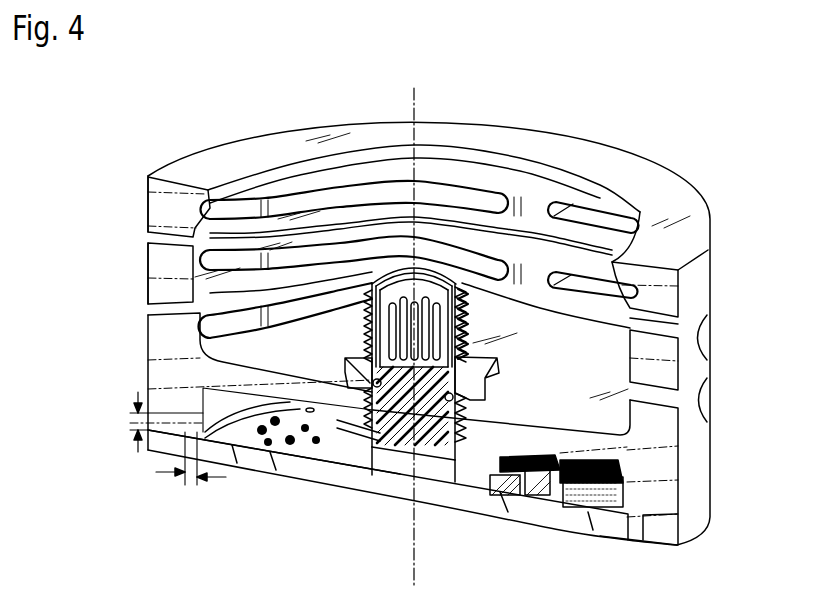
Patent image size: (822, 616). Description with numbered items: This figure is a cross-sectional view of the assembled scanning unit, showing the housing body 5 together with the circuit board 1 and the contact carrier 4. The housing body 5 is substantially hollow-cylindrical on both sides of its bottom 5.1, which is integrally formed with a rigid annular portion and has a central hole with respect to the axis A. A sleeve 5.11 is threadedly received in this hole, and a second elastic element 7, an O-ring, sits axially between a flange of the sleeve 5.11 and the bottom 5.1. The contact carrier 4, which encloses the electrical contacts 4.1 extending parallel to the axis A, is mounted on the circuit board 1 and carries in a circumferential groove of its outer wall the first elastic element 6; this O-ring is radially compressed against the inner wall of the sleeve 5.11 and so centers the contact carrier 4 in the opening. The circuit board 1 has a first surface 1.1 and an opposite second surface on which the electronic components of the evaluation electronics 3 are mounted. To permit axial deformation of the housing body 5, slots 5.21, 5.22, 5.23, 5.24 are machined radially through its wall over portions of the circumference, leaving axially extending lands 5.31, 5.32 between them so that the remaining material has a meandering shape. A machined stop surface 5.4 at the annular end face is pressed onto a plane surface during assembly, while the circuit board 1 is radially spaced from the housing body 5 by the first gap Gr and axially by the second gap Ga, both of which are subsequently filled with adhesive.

The circuit board 1 is at (462, 488).
The first surface 1.1 is at (245, 473).
The evaluation electronics 3 is at (548, 500).
The contact carrier 4 is at (438, 485).
The electrical contacts 4.1 is at (367, 311).
The housing body 5 is at (694, 480).
The bottom 5.1 is at (326, 478).
The sleeve 5.11 is at (383, 483).
The slot 5.21 is at (160, 238).
The slot 5.22 is at (703, 343).
The slot 5.23 is at (163, 307).
The slot 5.24 is at (705, 420).
The land 5.31 is at (545, 213).
The land 5.32 is at (524, 294).
The stop surface 5.4 is at (653, 546).
The first elastic element 6 is at (483, 378).
The second elastic element 7 is at (343, 363).
The axis A is at (411, 95).
The second gap Ga is at (122, 422).
The first gap Gr is at (191, 492).